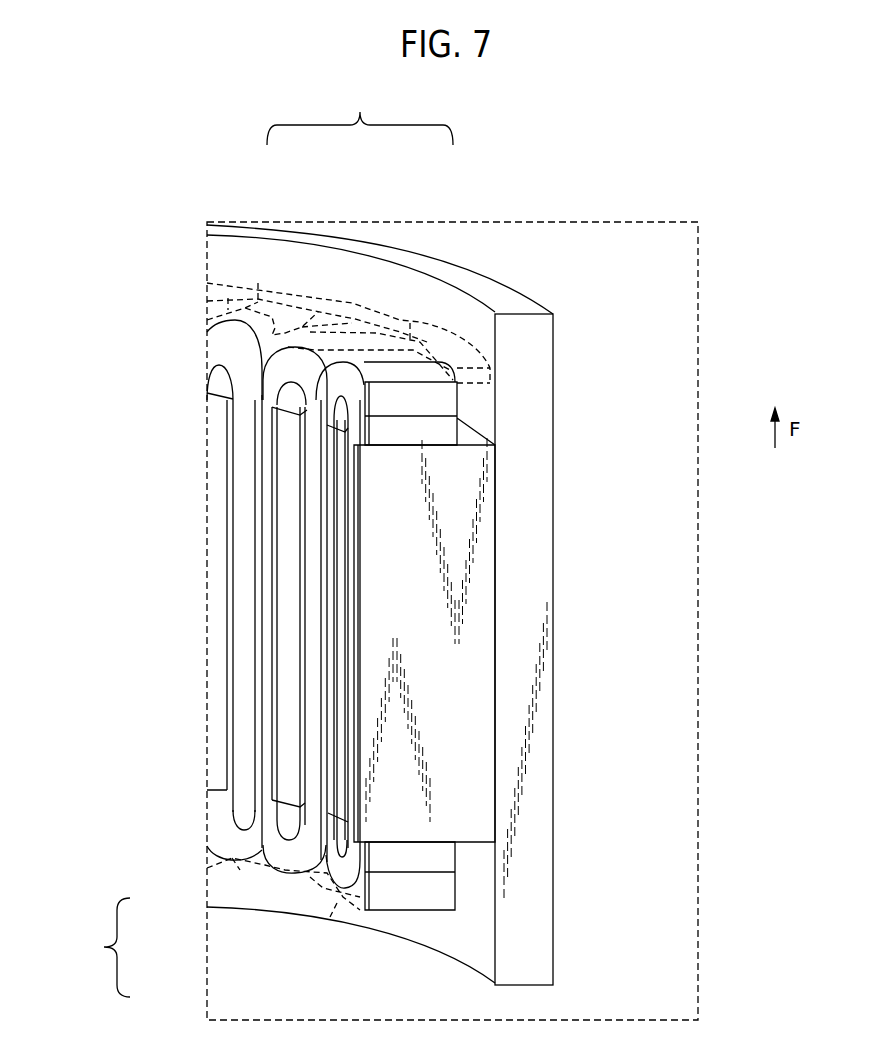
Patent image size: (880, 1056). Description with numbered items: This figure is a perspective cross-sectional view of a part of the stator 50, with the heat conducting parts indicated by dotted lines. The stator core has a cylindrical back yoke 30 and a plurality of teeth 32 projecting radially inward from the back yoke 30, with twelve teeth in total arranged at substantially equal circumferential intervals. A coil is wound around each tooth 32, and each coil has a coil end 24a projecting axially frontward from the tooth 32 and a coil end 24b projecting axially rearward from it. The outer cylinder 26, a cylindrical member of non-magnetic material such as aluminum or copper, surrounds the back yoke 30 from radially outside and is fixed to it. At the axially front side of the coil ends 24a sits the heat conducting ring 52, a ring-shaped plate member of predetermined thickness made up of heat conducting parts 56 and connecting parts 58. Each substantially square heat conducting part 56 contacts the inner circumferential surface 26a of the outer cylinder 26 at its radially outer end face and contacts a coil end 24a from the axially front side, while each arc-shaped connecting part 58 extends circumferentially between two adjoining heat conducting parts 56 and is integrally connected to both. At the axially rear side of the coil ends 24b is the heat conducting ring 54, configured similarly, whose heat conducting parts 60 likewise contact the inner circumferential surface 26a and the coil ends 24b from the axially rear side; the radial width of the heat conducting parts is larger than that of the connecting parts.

The stator 50 is at (750, 118).
The heat conducting ring 52 is at (360, 115).
The heat conducting part 56 is at (423, 317).
The connecting part 58 is at (410, 323).
The outer cylinder 26 is at (536, 355).
The back yoke 30 is at (463, 437).
The tooth 32 is at (333, 510).
The coil end 24a is at (340, 390).
The coil end 24b is at (343, 860).
The heat conducting part 60 is at (345, 898).
The heat conducting ring 54 is at (101, 947).
The inner circumferential surface 26a is at (480, 873).